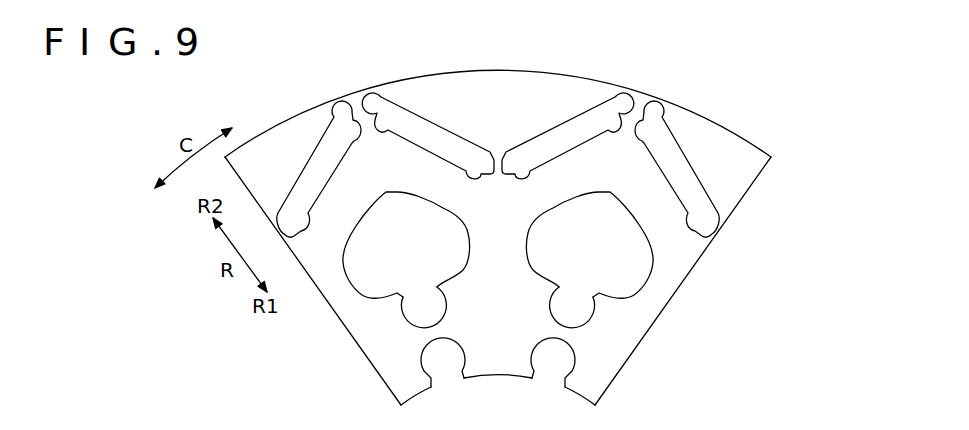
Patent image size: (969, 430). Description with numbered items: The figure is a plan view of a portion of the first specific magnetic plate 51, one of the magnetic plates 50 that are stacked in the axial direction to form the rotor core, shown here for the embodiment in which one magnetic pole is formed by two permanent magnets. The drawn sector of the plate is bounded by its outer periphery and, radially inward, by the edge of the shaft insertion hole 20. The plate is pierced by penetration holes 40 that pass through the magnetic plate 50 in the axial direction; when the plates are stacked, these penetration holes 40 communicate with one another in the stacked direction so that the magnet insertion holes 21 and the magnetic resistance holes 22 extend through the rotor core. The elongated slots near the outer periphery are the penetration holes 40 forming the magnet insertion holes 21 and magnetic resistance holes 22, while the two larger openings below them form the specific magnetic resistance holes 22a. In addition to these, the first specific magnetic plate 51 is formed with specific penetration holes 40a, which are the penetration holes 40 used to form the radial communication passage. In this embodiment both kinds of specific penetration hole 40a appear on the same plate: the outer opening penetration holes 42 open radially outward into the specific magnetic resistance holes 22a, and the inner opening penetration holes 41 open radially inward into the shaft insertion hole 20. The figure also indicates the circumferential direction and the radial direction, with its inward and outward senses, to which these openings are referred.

The shaft insertion hole 20 is at (583, 401).
The first specific magnetic plate 51 is at (748, 177).
The magnetic plate 50 is at (498, 113).
The penetration hole 40 is at (392, 121).
The magnet insertion hole 21 is at (498, 165).
The magnetic resistance hole 22 is at (498, 165).
The specific magnetic resistance hole 22a is at (385, 210).
The specific penetration hole 40a is at (499, 347).
The inner opening penetration hole 41 is at (430, 365).
The outer opening penetration hole 42 is at (412, 311).